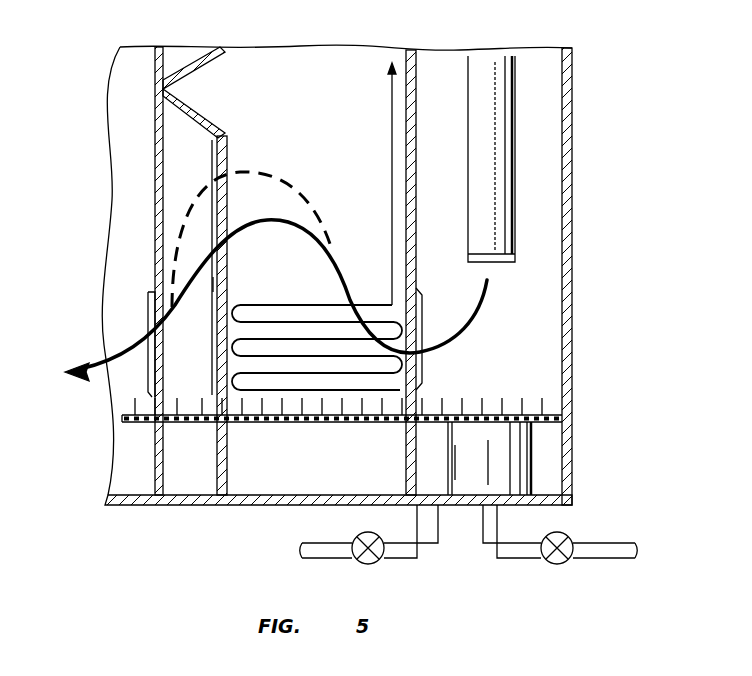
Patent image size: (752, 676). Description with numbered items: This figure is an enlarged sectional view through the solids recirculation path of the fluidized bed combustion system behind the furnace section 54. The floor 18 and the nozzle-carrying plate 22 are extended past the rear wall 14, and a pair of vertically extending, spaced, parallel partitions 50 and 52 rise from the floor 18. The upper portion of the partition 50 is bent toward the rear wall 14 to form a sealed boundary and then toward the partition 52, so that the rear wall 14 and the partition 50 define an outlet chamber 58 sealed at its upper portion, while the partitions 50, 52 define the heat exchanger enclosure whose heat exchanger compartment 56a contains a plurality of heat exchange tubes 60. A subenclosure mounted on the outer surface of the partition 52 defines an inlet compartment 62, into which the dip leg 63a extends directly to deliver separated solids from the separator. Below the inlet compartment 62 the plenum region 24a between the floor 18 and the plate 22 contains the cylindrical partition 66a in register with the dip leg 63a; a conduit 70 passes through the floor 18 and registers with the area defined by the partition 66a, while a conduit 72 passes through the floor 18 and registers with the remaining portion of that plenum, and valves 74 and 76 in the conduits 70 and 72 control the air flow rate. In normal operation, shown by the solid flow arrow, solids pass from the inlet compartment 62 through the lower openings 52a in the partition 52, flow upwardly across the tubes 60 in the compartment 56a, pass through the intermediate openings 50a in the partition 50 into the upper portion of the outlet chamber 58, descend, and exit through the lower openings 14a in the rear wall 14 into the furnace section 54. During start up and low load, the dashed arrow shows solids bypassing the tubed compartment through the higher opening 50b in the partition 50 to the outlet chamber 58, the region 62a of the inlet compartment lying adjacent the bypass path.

The rear wall 14 is at (155, 265).
The openings 14a is at (149, 293).
The floor 18 is at (183, 503).
The plate 22 is at (133, 422).
The plenum chamber 24a is at (340, 464).
The partition 50 is at (228, 293).
The openings 50a is at (213, 277).
The opening 50b is at (210, 147).
The partition 52 is at (418, 264).
The openings 52a is at (423, 372).
The furnace section 54 is at (128, 208).
The heat exchanger compartment 56a is at (316, 151).
The outlet chamber 58 is at (172, 173).
The heat exchange tubes 60 is at (362, 290).
The inlet compartment 62 is at (572, 125).
The duct chamber 62a is at (537, 268).
The dip leg 63a is at (463, 78).
The cylindrical partition 66a is at (537, 462).
The conduit 70 is at (620, 543).
The conduit 72 is at (312, 542).
The valve 74 is at (567, 562).
The valve 76 is at (378, 561).